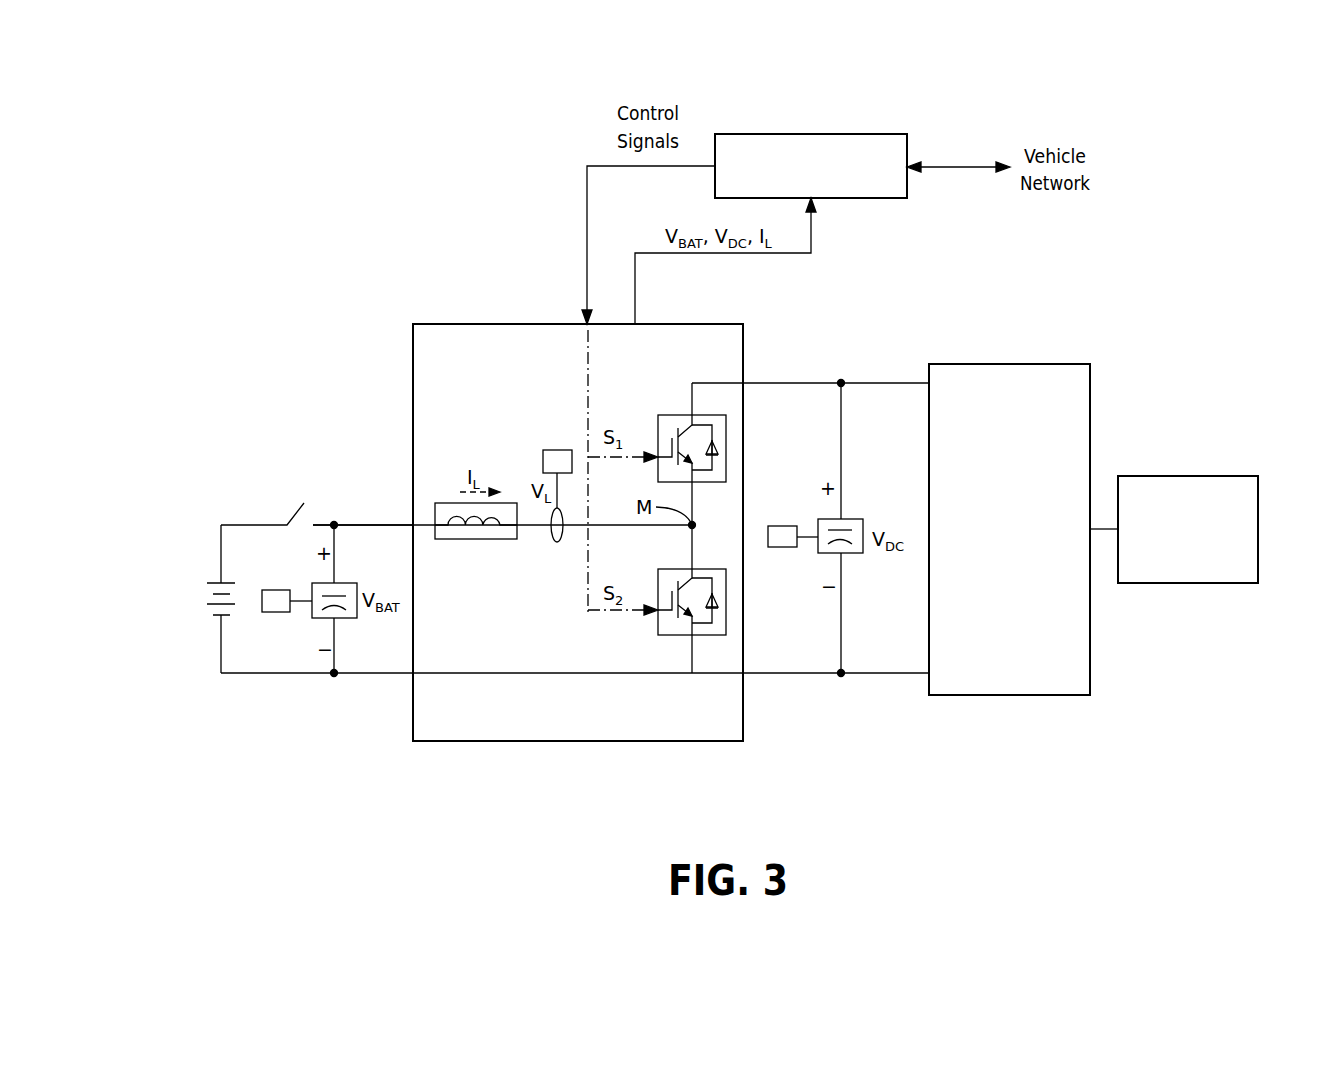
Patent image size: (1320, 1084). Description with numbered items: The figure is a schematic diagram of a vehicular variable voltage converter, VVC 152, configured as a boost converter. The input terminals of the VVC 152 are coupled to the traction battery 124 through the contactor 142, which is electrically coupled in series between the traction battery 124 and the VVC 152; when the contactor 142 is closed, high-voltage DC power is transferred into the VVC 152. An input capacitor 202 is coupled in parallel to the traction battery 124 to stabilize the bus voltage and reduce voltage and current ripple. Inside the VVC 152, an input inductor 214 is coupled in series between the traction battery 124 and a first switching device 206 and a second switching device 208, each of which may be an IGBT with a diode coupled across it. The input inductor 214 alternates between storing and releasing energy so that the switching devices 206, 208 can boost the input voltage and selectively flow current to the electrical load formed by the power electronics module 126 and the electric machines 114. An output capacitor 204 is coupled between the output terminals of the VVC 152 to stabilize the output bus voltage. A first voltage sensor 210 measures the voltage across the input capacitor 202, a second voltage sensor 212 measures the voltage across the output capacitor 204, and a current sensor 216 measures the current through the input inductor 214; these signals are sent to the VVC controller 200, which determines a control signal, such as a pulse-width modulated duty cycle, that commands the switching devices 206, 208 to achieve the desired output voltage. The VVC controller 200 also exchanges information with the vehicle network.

The electric machines 114 is at (1165, 476).
The traction battery 124 is at (207, 594).
The power electronics module 126 is at (987, 364).
The contactor 142 is at (297, 512).
The variable voltage converter 152 is at (580, 741).
The VVC controller 200 is at (810, 134).
The input capacitor 202 is at (343, 583).
The output capacitor 204 is at (853, 519).
The first switching device 206 is at (676, 415).
The second switching device 208 is at (676, 569).
The first voltage sensor 210 is at (283, 590).
The second voltage sensor 212 is at (786, 526).
The input inductor 214 is at (477, 539).
The current sensor 216 is at (557, 450).